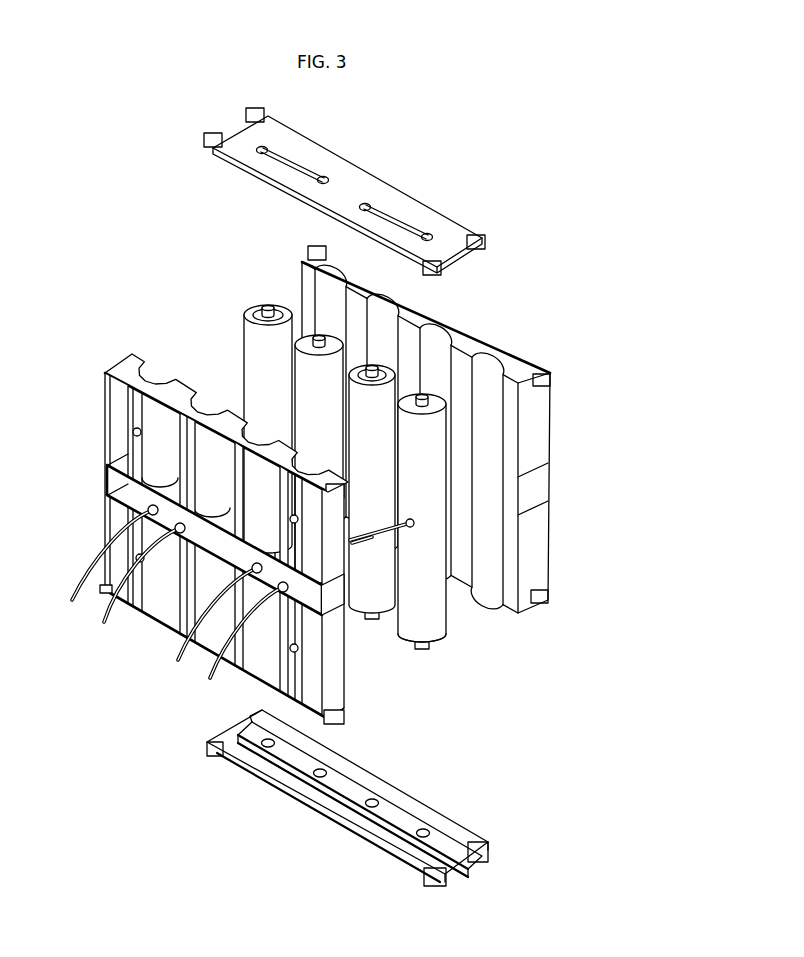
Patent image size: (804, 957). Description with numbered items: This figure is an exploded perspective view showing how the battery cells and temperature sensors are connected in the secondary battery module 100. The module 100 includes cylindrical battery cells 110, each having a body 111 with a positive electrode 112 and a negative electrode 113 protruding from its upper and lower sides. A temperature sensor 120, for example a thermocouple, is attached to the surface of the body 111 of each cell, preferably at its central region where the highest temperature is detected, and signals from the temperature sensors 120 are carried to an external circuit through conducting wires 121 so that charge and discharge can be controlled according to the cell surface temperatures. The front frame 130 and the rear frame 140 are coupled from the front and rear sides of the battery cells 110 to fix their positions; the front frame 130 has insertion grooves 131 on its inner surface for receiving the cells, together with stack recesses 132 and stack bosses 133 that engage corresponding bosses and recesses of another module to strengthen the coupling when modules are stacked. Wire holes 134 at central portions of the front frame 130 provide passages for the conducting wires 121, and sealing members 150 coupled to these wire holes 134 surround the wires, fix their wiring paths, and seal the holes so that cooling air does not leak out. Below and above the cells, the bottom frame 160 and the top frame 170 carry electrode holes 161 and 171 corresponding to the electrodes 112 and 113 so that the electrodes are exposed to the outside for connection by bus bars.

The secondary battery module 100 is at (105, 107).
The battery cells 110 is at (318, 439).
The body 111 is at (241, 409).
The positive electrode 112 is at (263, 306).
The negative electrode 113 is at (314, 334).
The temperature sensors 120 is at (413, 526).
The conducting wires 121 is at (372, 537).
The front frame 130 is at (199, 520).
The insertion grooves 131 is at (150, 367).
The stack recesses 132 is at (133, 431).
The stack bosses 133 is at (136, 557).
The wire holes 134 is at (104, 494).
The rear frame 140 is at (556, 388).
The sealing members 150 is at (178, 532).
The bottom frame 160 is at (347, 806).
The electrode holes 161 is at (364, 807).
The top frame 170 is at (345, 191).
The electrode holes 171 is at (368, 205).